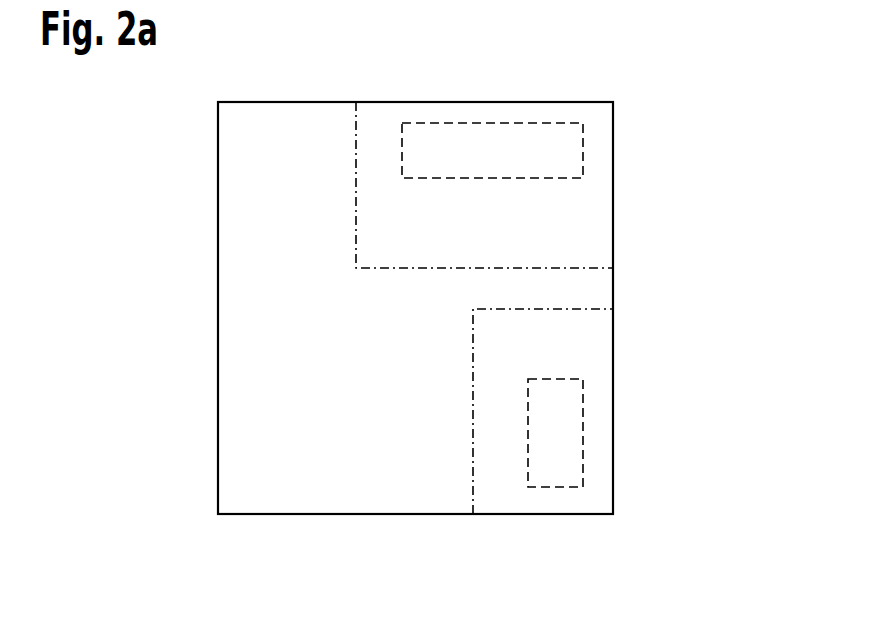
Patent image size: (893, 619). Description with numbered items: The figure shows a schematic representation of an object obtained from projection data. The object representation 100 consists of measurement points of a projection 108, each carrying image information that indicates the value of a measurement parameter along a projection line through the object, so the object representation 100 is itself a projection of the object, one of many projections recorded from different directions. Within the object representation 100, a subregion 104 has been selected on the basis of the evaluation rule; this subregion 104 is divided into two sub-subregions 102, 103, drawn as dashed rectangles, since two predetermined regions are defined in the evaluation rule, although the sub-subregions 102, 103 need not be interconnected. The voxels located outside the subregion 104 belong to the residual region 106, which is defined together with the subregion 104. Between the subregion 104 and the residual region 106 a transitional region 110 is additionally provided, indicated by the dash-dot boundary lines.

The object representation 100 is at (658, 96).
The sub-subregion 102 is at (565, 465).
The sub-subregion 103 is at (500, 145).
The subregion 104 is at (593, 140).
The residual region 106 is at (252, 323).
The projection 108 is at (263, 102).
The transitional region 110 is at (581, 274).